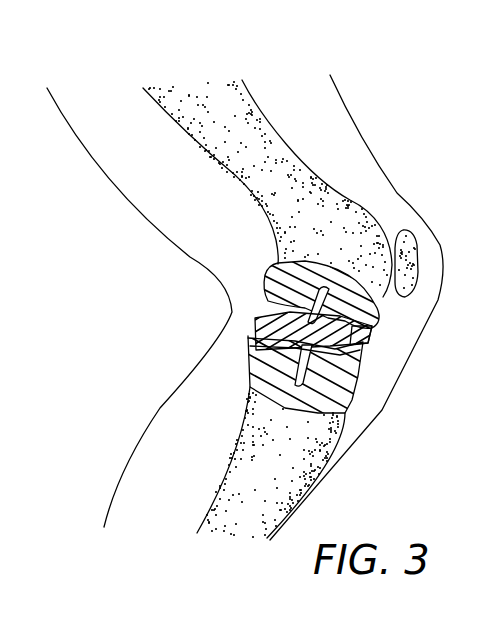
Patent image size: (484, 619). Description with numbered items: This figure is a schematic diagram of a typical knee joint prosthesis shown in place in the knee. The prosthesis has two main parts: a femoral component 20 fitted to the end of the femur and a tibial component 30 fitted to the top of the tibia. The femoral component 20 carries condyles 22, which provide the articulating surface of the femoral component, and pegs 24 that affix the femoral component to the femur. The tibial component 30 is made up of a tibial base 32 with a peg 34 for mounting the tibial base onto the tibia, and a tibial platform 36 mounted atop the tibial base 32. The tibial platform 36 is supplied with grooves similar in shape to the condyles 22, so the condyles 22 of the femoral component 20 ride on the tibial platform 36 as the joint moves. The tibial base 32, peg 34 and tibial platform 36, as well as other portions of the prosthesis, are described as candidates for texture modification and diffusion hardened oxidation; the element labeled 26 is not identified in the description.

The femoral component 20 is at (326, 329).
The condyles 22 is at (265, 303).
The pegs 24 is at (280, 270).
The bearing insert 26 is at (366, 344).
The tibial component 30 is at (372, 358).
The tibial base 32 is at (248, 348).
The peg 34 is at (252, 390).
The tibial platform 36 is at (370, 349).